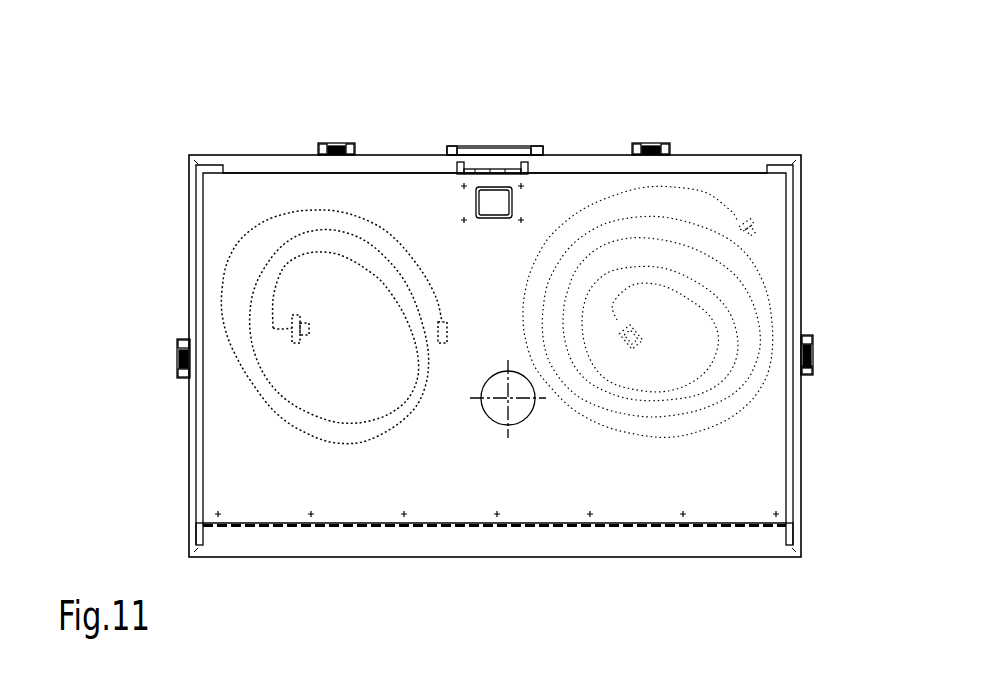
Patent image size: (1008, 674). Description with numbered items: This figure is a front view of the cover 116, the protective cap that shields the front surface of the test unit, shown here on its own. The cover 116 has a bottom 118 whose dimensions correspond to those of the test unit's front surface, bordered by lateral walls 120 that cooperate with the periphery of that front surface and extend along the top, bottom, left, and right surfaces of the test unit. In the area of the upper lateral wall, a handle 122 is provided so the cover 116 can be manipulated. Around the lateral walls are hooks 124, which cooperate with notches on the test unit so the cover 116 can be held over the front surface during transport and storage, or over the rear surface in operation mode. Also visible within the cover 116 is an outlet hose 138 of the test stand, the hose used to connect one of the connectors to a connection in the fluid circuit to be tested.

The cover 116 is at (512, 82).
The bottom 118 is at (397, 198).
The lateral walls 120 is at (733, 165).
The handle 122 is at (500, 148).
The hooks 124 is at (338, 143).
The outlet hose 138 is at (350, 443).